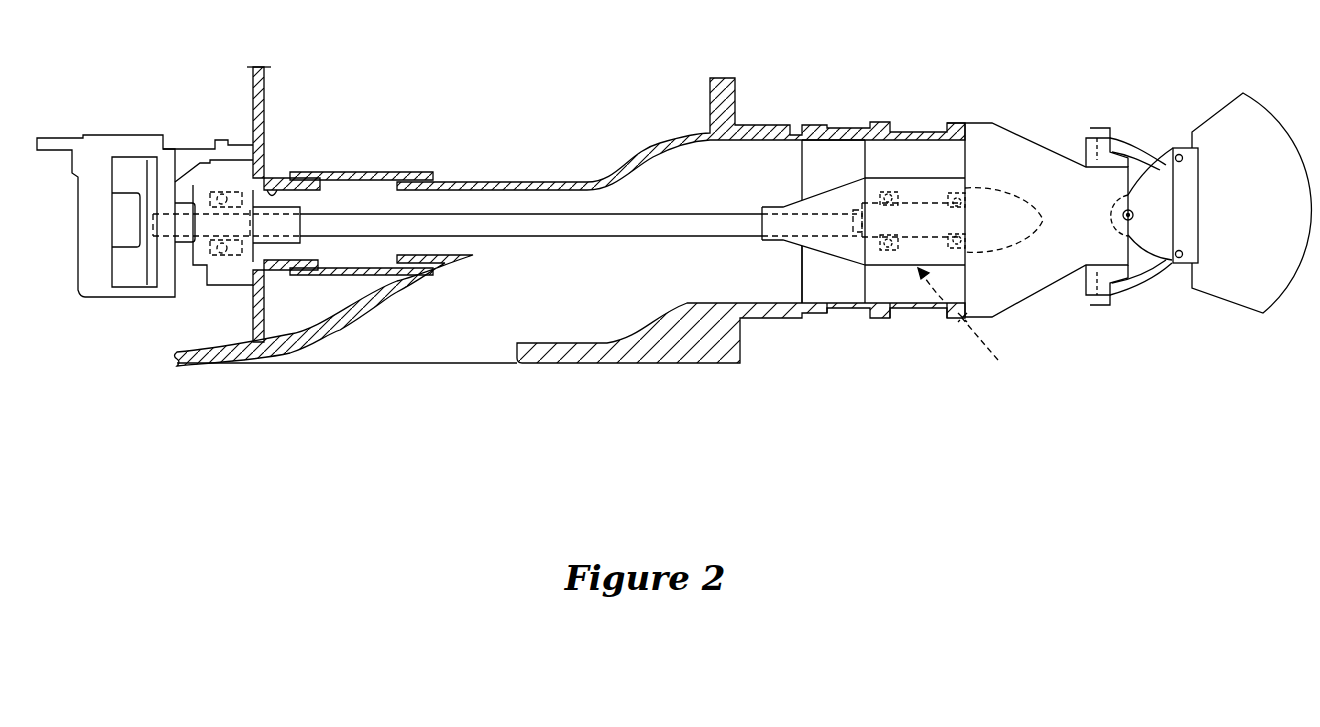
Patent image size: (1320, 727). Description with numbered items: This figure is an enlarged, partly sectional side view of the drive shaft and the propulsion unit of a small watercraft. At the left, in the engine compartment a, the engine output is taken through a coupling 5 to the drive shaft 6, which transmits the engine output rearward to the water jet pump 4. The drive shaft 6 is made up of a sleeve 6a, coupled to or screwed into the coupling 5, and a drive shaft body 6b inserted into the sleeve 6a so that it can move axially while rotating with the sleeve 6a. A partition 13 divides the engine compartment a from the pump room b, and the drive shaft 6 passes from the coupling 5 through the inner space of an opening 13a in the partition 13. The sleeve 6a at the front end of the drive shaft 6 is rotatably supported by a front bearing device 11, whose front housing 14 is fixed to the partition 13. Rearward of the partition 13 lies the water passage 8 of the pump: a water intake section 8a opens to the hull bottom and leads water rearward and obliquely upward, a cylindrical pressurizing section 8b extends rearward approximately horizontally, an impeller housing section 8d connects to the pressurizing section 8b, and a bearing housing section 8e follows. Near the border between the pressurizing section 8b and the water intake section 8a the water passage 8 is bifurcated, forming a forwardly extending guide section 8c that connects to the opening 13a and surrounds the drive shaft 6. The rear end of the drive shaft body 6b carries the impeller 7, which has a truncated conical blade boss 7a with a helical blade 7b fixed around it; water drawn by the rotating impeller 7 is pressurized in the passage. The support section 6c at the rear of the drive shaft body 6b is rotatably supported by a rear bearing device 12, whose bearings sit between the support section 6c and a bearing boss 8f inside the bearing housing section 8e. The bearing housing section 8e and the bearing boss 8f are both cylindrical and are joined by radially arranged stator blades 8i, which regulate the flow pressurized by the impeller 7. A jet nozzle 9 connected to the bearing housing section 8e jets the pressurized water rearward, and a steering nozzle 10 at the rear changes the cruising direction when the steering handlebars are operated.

The water jet pump 4 is at (893, 331).
The coupling 5 is at (128, 150).
The drive shaft 6 is at (403, 112).
The sleeve 6a is at (290, 207).
The drive shaft body 6b is at (345, 214).
The support section 6c is at (912, 205).
The impeller 7 is at (803, 167).
The blade boss 7a is at (802, 191).
The helical blade 7b is at (828, 155).
The water passage 8 is at (402, 364).
The water intake section 8a is at (515, 307).
The pressurizing section 8b is at (785, 305).
The guide section 8c is at (428, 200).
The impeller housing section 8d is at (840, 315).
The bearing housing section 8e is at (924, 310).
The bearing boss 8f is at (927, 178).
The stator blades 8i is at (952, 160).
The jet nozzle 9 is at (1045, 290).
The steering nozzle 10 is at (1174, 265).
The front bearing device 11 is at (231, 270).
The rear bearing device 12 is at (968, 328).
The partition 13 is at (270, 73).
The opening 13a is at (275, 192).
The front housing 14 is at (233, 140).
The engine compartment a is at (108, 85).
The pump room b is at (553, 92).